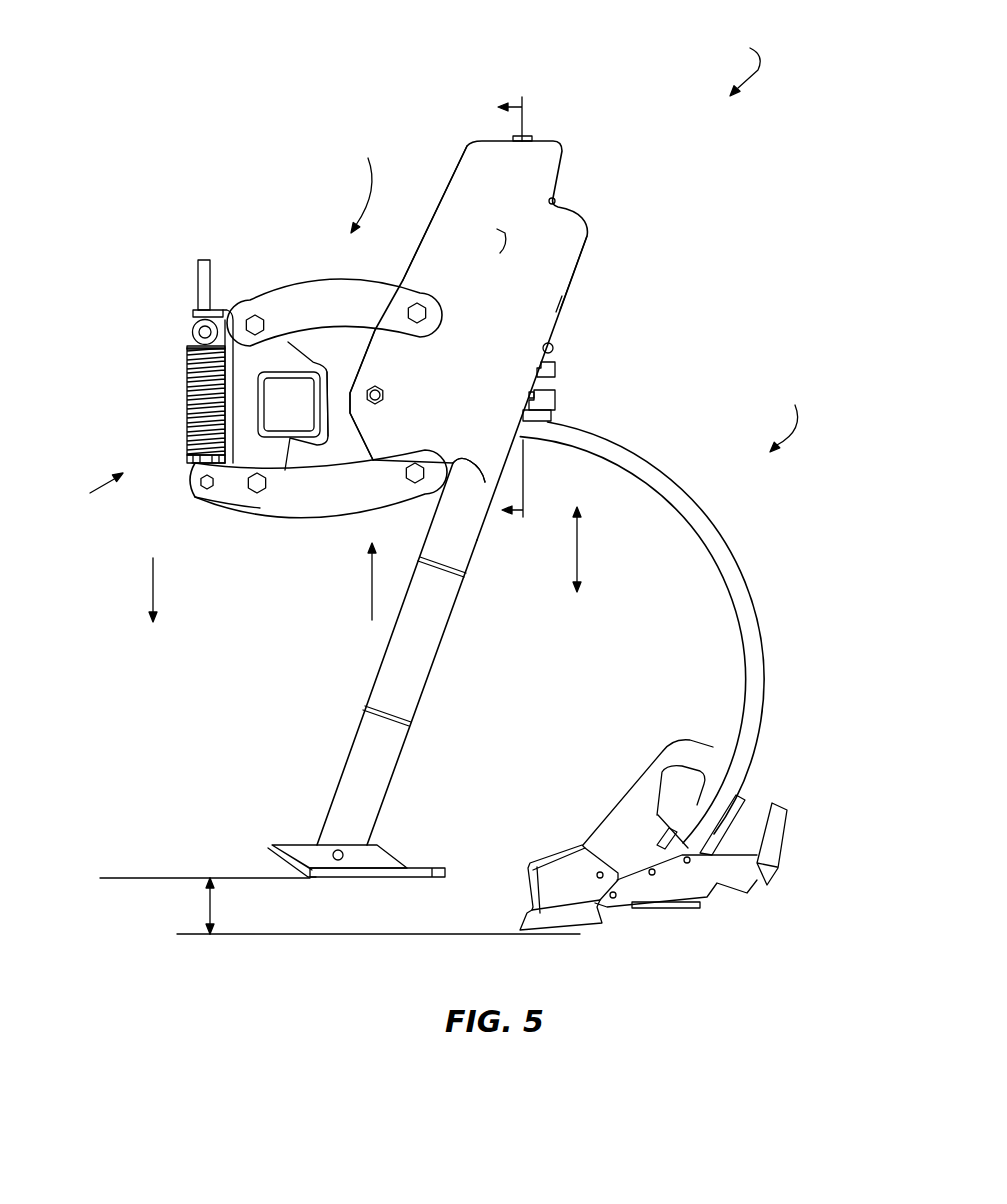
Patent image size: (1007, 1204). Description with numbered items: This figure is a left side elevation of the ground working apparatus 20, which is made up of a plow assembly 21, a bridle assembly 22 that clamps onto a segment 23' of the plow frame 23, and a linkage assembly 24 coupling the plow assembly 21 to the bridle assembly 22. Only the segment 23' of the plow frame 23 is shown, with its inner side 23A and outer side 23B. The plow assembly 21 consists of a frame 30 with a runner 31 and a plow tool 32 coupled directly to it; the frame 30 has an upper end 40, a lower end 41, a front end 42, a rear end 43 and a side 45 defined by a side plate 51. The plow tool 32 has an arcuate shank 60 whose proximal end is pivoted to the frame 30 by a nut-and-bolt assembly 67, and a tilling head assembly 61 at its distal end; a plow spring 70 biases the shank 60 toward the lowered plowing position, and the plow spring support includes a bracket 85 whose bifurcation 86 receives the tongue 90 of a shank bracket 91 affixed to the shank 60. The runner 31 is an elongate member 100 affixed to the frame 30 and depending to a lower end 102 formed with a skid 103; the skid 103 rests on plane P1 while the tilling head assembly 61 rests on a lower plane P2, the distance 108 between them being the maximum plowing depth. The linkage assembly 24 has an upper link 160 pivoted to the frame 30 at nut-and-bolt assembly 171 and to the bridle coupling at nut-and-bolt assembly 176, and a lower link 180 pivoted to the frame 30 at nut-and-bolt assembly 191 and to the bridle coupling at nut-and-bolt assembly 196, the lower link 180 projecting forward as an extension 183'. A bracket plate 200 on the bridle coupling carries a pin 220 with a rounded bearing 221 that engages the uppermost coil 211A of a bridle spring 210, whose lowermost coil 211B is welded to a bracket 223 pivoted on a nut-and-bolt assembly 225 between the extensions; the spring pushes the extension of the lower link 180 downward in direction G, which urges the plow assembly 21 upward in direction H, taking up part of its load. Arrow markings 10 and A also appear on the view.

The direction of travel arrow 10 is at (519, 317).
The ground working apparatus 20 is at (739, 67).
The plow assembly 21 is at (778, 418).
The bridle assembly 22 is at (89, 494).
The plow frame 23 is at (306, 493).
The segment 23' is at (341, 466).
The inner side 23A is at (320, 410).
The outer side 23B is at (258, 404).
The linkage assembly 24 is at (355, 193).
The frame 30 is at (571, 136).
The runner 31 is at (431, 697).
The plow tool 32 is at (690, 676).
The upper end 40 is at (540, 141).
The lower end 41 is at (485, 482).
The front end 42 is at (450, 188).
The rear end 43 is at (560, 302).
The side 45 is at (556, 270).
The side plate 51 is at (500, 258).
The shank 60 is at (742, 577).
The tilling head assembly 61 is at (569, 838).
The nut-and-bolt assembly 67 is at (387, 394).
The plow spring 70 is at (553, 345).
The bracket 85 is at (556, 375).
The bifurcation 86 is at (529, 392).
The tongue 90 is at (556, 398).
The shank bracket 91 is at (545, 420).
The elongate member 100 is at (433, 628).
The lower end 102 is at (360, 833).
The skid 103 is at (405, 863).
The distance 108 is at (210, 907).
The upper link 160 is at (375, 270).
The nut-and-bolt assembly 171 is at (427, 293).
The nut-and-bolt assembly 176 is at (263, 293).
The lower link 180 is at (275, 526).
The extension 183' is at (209, 534).
The nut-and-bolt assembly 191 is at (417, 487).
The nut-and-bolt assembly 196 is at (255, 507).
The bracket plate 200 is at (193, 312).
The bridle spring 210 is at (187, 373).
The outermost coil 211A is at (187, 355).
The outermost coil 211B is at (187, 453).
The pin 220 is at (212, 262).
The rounded bearing 221 is at (192, 333).
The bracket 223 is at (190, 468).
The nut-and-bolt assembly 225 is at (193, 498).
The vertical adjustment direction A is at (577, 553).
The arrowed line G is at (153, 582).
The arrowed line H is at (372, 597).
The skidding plane P1 is at (138, 877).
The plowing plane P2 is at (287, 933).